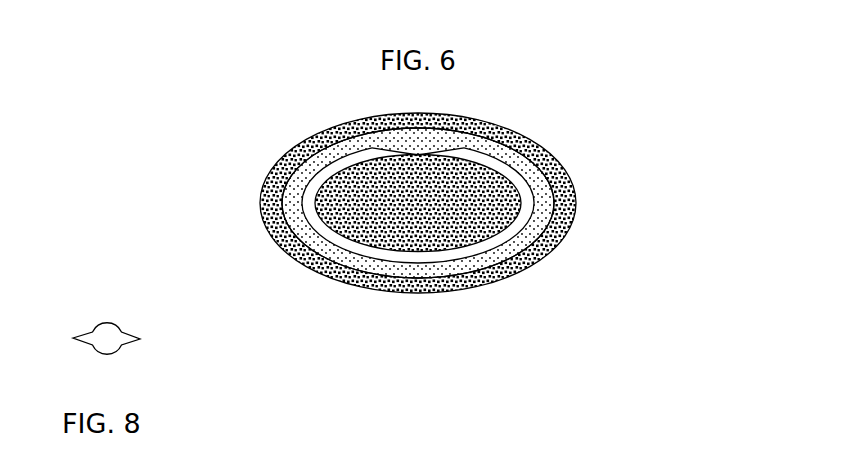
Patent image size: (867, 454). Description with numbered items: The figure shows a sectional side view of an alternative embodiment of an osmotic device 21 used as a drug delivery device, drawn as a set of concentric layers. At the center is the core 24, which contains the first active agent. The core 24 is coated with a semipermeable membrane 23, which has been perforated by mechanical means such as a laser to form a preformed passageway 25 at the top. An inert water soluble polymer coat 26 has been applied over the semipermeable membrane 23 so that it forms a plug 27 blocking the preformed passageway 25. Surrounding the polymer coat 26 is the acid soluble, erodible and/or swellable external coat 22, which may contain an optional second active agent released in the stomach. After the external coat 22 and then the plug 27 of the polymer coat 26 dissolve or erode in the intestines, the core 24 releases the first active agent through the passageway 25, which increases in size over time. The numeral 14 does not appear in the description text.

The osmotic device 21 is at (585, 114).
The external coat 22 is at (589, 194).
The semipermeable membrane 23 is at (486, 264).
The core 24 is at (390, 250).
The preformed passageway 25 is at (377, 131).
The polymer coat 26 is at (548, 250).
The plug 27 is at (433, 138).
The dimple 14 is at (526, 445).